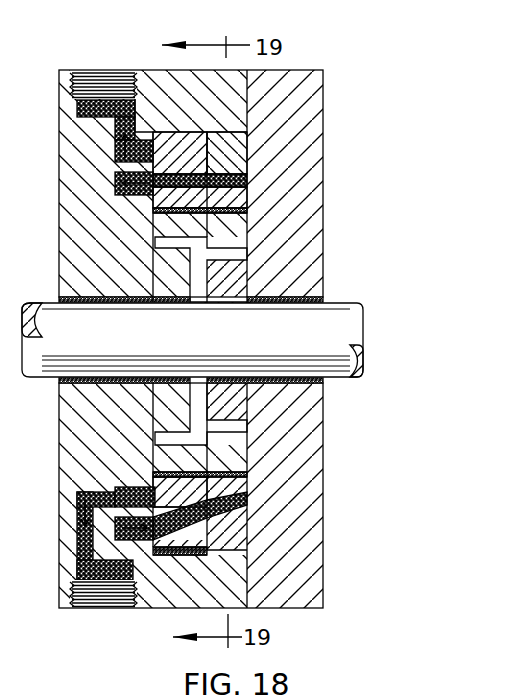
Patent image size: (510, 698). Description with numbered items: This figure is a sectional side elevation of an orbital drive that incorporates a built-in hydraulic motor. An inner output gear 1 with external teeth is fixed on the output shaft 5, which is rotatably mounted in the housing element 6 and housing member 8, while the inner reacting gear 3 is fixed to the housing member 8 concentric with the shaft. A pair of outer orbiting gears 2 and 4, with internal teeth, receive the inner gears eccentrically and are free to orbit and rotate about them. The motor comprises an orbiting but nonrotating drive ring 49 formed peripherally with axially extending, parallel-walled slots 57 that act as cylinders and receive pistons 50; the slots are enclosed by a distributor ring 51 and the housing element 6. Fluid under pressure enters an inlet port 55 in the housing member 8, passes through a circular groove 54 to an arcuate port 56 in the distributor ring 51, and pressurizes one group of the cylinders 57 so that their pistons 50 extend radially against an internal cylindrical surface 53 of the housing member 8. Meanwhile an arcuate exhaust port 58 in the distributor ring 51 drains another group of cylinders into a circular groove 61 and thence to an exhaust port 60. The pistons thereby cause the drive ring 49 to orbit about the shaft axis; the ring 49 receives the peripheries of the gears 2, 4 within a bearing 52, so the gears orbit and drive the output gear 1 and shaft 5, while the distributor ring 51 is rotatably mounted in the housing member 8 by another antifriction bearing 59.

The inner output gear 1 is at (233, 283).
The outer orbiting gear 2 is at (232, 240).
The inner reacting gear 3 is at (180, 275).
The outer orbiting gear 4 is at (167, 225).
The output shaft 5 is at (338, 303).
The housing element 6 is at (320, 430).
The housing member 8 is at (59, 415).
The drive ring 49 is at (227, 202).
The piston 50 is at (232, 158).
The distributor ring 51 is at (207, 172).
The bearing 52 is at (155, 208).
The internal cylindrical surface 53 is at (250, 128).
The circular groove 54 is at (152, 548).
The inlet port 55 is at (103, 72).
The arcuate port 56 is at (197, 518).
The slot 57 is at (233, 500).
The arcuate exhaust port 58 is at (165, 170).
The antifriction bearing 59 is at (133, 137).
The exhaust port 60 is at (132, 582).
The circular groove 61 is at (117, 487).